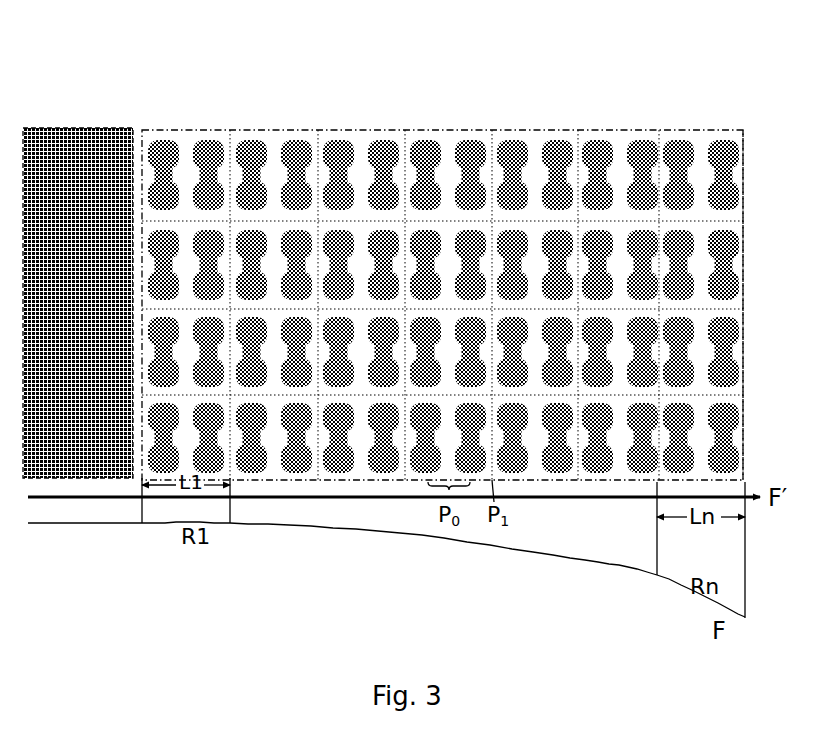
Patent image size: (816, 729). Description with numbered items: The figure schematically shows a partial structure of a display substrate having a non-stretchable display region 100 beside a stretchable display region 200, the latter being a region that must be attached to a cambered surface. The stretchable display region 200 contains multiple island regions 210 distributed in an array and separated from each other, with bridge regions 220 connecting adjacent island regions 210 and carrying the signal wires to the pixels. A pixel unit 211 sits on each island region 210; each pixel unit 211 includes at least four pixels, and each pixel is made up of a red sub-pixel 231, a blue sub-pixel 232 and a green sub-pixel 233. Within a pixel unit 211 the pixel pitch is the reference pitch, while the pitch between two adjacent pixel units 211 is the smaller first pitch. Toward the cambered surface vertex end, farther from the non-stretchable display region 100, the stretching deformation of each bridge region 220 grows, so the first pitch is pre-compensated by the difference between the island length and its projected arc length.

The non-stretchable display region 100 is at (132, 47).
The stretchable display region 200 is at (478, 243).
The island region 210 is at (694, 172).
The pixel unit 211 is at (777, 305).
The bridge region 220 is at (656, 131).
The red sub-pixel 231 is at (733, 246).
The blue sub-pixel 232 is at (712, 238).
The green sub-pixel 233 is at (722, 255).